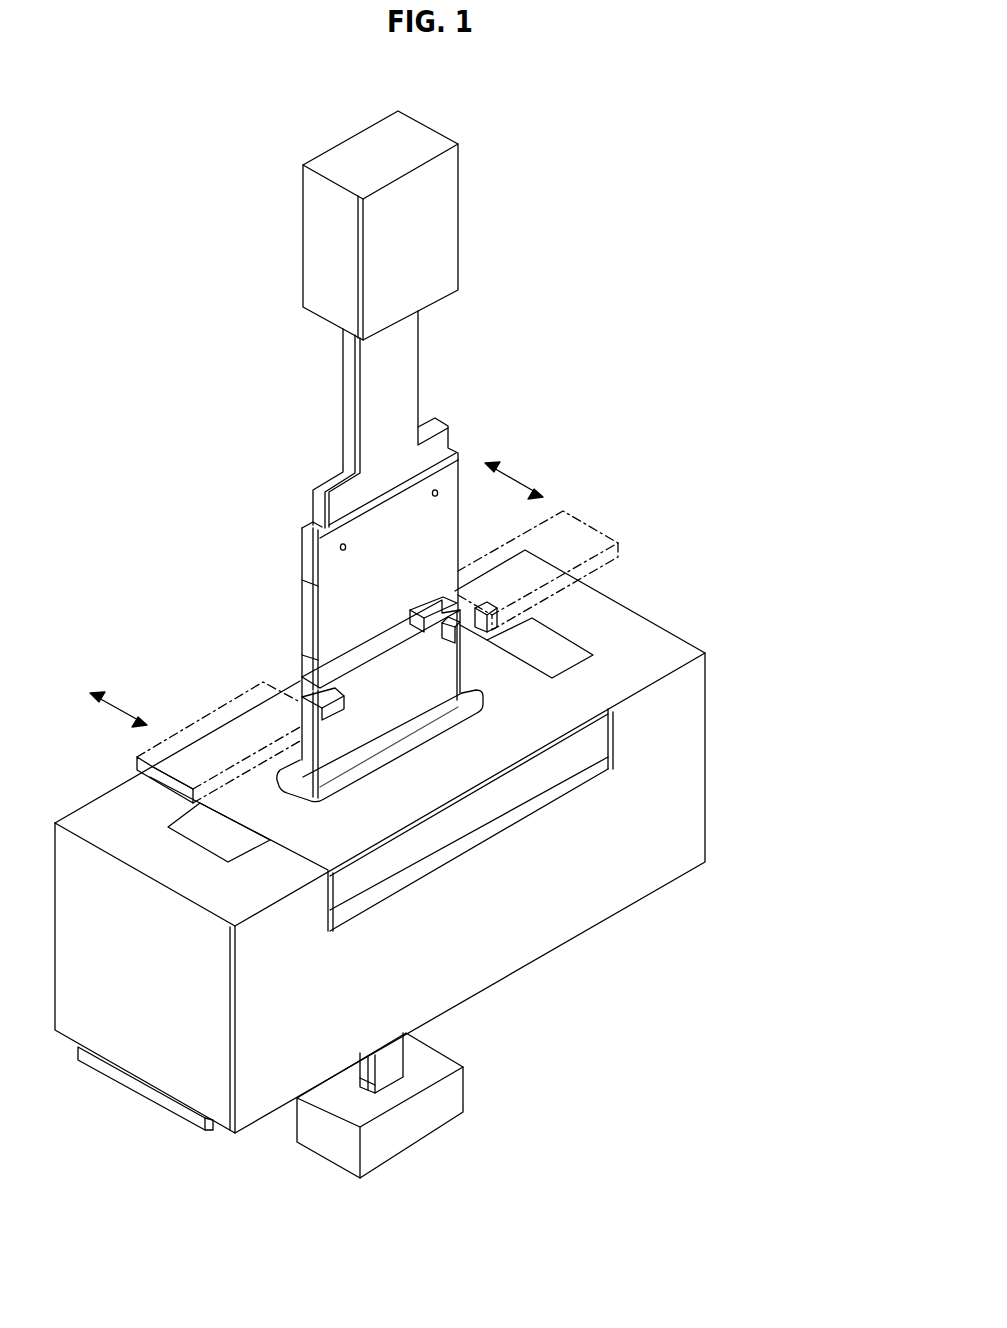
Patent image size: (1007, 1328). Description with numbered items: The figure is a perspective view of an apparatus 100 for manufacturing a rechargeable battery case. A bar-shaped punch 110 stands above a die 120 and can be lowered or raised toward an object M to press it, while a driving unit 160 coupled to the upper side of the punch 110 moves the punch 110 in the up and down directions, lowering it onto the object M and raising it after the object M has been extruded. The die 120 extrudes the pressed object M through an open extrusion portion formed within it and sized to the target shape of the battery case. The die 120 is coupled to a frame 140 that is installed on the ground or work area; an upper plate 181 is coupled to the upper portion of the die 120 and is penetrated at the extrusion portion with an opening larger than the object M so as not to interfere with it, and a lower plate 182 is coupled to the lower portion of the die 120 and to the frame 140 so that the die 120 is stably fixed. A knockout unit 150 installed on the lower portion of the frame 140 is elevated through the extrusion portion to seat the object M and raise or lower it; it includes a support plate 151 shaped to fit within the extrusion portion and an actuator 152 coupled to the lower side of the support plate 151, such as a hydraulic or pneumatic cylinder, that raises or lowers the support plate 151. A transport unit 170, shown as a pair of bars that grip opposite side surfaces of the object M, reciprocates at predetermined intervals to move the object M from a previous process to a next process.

The apparatus for manufacturing a rechargeable battery case 100 is at (152, 199).
The punch 110 is at (300, 548).
The object M is at (303, 667).
The die 120 is at (582, 748).
The frame 140 is at (647, 865).
The knockout unit 150 is at (648, 983).
The support plate 151 is at (375, 762).
The actuator 152 is at (433, 1067).
The driving unit 160 is at (435, 217).
The transport unit 170 is at (588, 522).
The upper plate 181 is at (552, 713).
The lower plate 182 is at (583, 768).